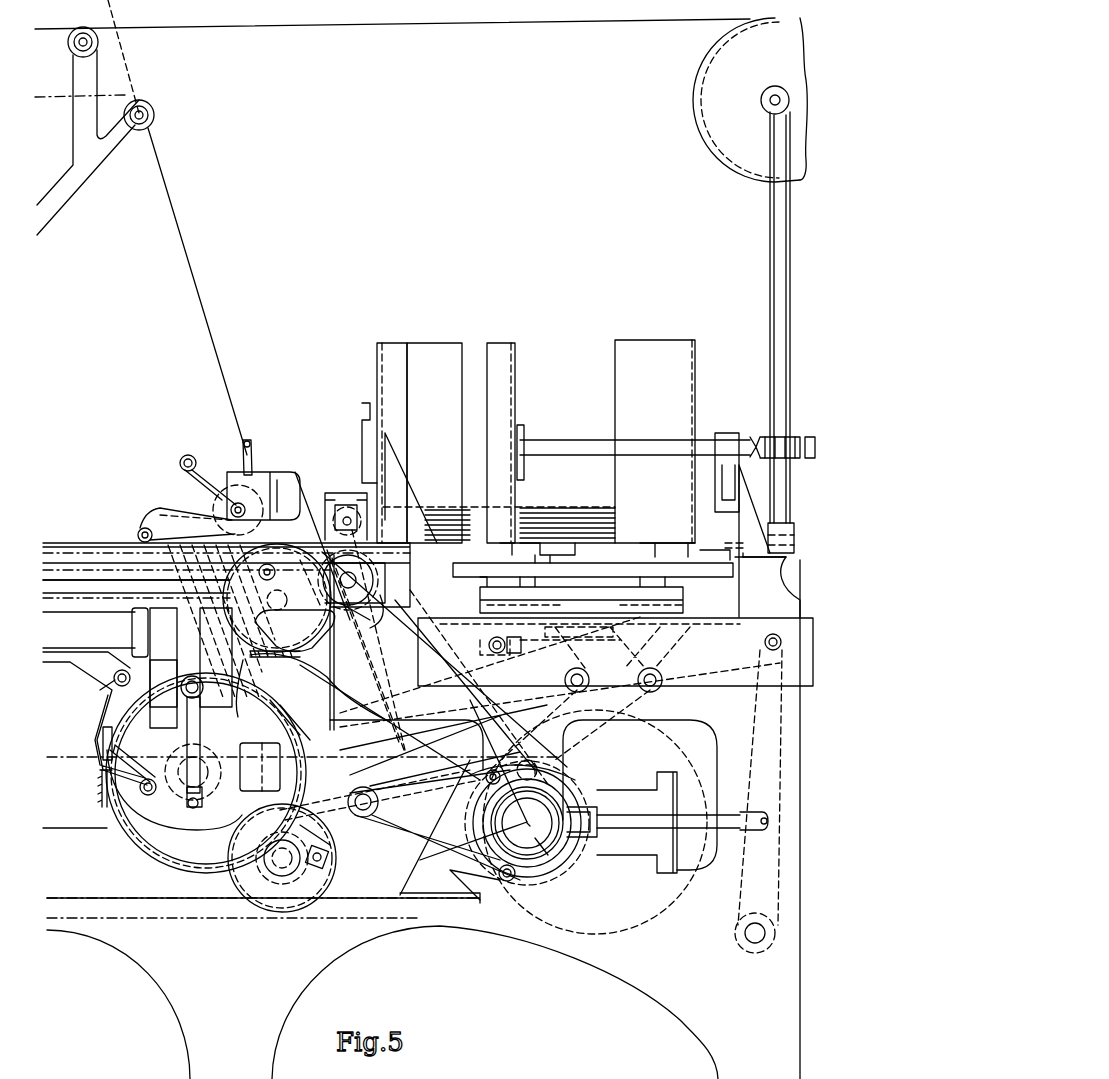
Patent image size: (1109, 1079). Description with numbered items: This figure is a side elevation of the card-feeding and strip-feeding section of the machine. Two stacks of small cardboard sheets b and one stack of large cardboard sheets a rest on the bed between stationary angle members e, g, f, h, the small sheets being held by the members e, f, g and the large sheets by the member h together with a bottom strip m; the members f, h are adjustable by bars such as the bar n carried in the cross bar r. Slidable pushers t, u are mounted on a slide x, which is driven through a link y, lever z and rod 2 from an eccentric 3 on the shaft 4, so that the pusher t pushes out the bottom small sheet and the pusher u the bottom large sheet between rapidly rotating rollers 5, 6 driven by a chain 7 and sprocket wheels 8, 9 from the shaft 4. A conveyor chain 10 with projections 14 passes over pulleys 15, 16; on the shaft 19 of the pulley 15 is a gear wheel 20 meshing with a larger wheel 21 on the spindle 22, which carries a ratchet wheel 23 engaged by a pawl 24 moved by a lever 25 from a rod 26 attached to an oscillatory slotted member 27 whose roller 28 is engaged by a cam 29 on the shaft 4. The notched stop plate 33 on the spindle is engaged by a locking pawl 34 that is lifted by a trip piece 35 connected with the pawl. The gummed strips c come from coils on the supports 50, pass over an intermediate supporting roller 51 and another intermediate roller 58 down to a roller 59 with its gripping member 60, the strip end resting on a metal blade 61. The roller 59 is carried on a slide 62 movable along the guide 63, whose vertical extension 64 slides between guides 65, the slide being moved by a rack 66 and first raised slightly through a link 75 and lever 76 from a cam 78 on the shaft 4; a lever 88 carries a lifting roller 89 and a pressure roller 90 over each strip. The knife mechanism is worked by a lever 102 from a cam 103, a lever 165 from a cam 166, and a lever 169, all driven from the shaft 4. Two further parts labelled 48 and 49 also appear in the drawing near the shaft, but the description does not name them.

The intermediate supporting roller 51 is at (98, 42).
The intermediate roller 58 is at (154, 115).
The gummed strips c is at (400, 22).
The supports 50 is at (770, 245).
The angle member e is at (390, 343).
The angle member g is at (428, 343).
The angle member f is at (507, 378).
The angle member h is at (625, 358).
The bar n is at (575, 443).
The cross bar r is at (730, 433).
The small cardboard sheets b is at (442, 510).
The large cardboard sheets a is at (578, 508).
The pusher t is at (540, 548).
The bottom strip m is at (650, 545).
The pusher u is at (718, 545).
The slide x is at (683, 590).
The link y is at (615, 655).
The lever z is at (752, 745).
The gripping member 60 is at (252, 450).
The slide 62 is at (300, 485).
The roller 59 is at (215, 503).
The lifting roller 89 is at (180, 463).
The lever 88 is at (230, 483).
The pressure roller 90 is at (138, 532).
The metal blade 61 is at (225, 513).
The roller 5 is at (328, 495).
The guide 63 is at (300, 596).
The roller 6 is at (358, 576).
The sprocket wheel 8 is at (365, 608).
The rack 66 is at (58, 590).
The pulley 16 is at (275, 654).
The guides 65 is at (245, 680).
The projections 14 is at (330, 672).
The chain 7 is at (370, 685).
The conveyor chain 10 is at (335, 705).
The lever 102 is at (370, 745).
The link 75 is at (290, 733).
The lever 169 is at (405, 788).
The notched stop plate 33 is at (155, 862).
The vertical extension 64 is at (140, 727).
The ratchet wheel 23 is at (158, 748).
The spindle 22 is at (185, 800).
The locking pawl 34 is at (103, 742).
The pawl 24 is at (132, 759).
The trip piece 35 is at (100, 770).
The gear wheel 21 is at (100, 795).
The lever 25 is at (230, 820).
The lever 76 is at (260, 767).
The gear wheel 20 is at (282, 858).
The shaft 19 is at (296, 870).
The pulley 15 is at (326, 866).
The lever 165 is at (340, 850).
The rod 26 is at (380, 818).
The roller 28 is at (455, 855).
The bar 49 is at (435, 898).
The cam 78 is at (500, 880).
The cam 48 is at (545, 885).
The cam 103 is at (558, 875).
The shaft 4 is at (558, 862).
The eccentric 3 is at (590, 832).
The sprocket wheel 9 is at (565, 780).
The cam 166 is at (568, 765).
The cam 29 is at (645, 744).
The oscillatory slotted member 27 is at (622, 790).
The rod 2 is at (693, 815).